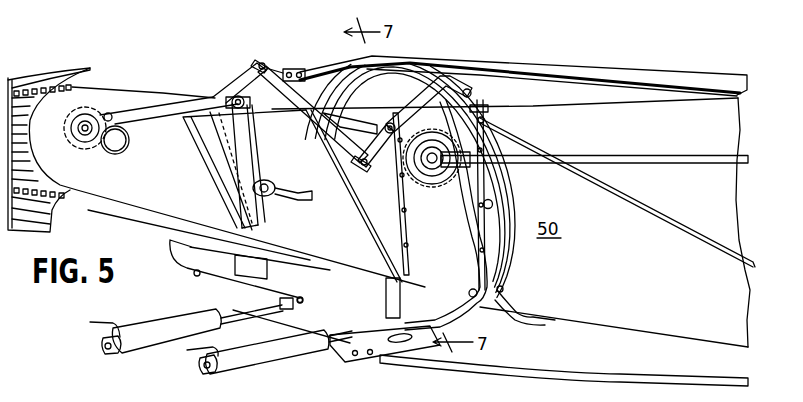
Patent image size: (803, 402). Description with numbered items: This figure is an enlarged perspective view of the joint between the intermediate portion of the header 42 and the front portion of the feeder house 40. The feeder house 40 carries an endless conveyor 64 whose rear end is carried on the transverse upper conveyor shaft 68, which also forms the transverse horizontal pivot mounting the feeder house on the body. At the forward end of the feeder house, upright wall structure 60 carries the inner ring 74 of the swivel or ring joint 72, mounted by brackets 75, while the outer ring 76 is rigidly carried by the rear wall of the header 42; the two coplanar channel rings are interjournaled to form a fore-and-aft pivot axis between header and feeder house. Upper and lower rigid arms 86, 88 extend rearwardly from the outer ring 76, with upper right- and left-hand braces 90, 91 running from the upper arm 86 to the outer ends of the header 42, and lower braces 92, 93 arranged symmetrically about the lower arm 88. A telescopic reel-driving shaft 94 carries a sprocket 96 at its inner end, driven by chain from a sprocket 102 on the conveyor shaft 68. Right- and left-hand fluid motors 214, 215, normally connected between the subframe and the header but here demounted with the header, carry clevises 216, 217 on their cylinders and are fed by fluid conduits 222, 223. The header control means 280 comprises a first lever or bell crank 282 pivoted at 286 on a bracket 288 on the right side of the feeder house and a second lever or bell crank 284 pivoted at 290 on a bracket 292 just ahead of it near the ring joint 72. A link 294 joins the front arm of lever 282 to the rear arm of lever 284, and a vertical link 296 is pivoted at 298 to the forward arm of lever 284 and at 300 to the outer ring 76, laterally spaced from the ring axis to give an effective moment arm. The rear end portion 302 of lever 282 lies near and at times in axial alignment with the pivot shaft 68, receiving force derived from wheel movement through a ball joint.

The feeder house 40 is at (162, 90).
The header 42 is at (640, 335).
The wall structure 60 is at (467, 260).
The endless conveyor 64 is at (21, 107).
The transverse upper conveyor shaft 68 is at (85, 135).
The swivel or pivot 72 is at (515, 252).
The inner ring 74 is at (480, 282).
The brackets 75 is at (470, 108).
The outer ring 76 is at (503, 289).
The upper rigid arm 86 is at (293, 68).
The lower rigid arm 88 is at (413, 345).
The upper right-hand brace 90 is at (545, 67).
The upper left-hand brace 91 is at (230, 85).
The right-hand lower brace 92 is at (517, 367).
The left-hand lower brace 93 is at (207, 287).
The reel-driving shaft 94 is at (635, 156).
The sprocket 96 is at (430, 190).
The sprocket 102 is at (92, 108).
The right-hand fluid motor 214 is at (270, 360).
The left-hand fluid motor 215 is at (143, 343).
The clevis 216 is at (203, 374).
The clevis 217 is at (100, 348).
The fluid conduit 222 is at (202, 352).
The fluid conduit 223 is at (90, 322).
The header control means 280 is at (255, 52).
The first lever or bell crank 282 is at (159, 115).
The second lever or bell crank 284 is at (413, 105).
The pivot 286 is at (244, 105).
The bracket 288 is at (255, 155).
The pivot 290 is at (387, 120).
The bracket 292 is at (395, 205).
The link 294 is at (325, 127).
The vertical link 296 is at (477, 133).
The pivotal connection 298 is at (468, 89).
The pivotal connection 300 is at (492, 204).
The rear end portion 302 is at (110, 114).